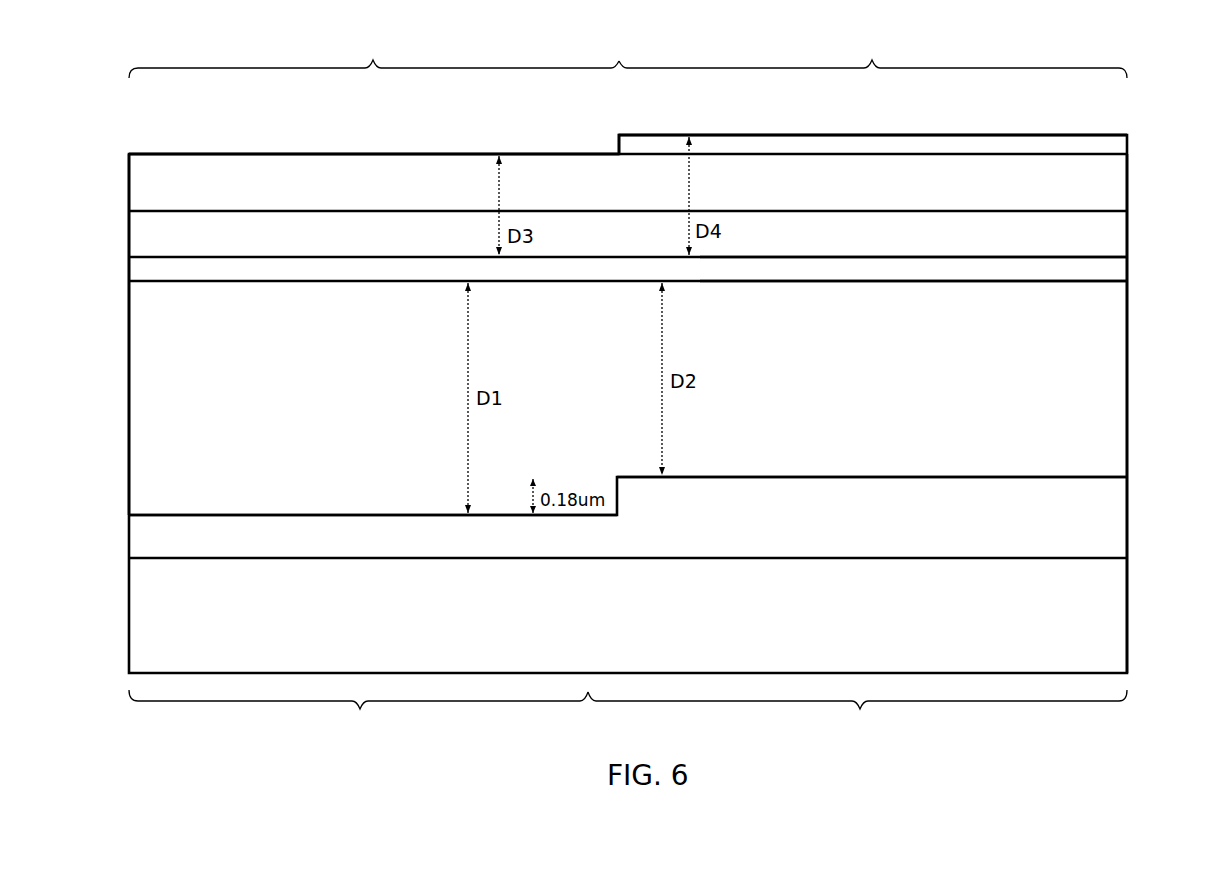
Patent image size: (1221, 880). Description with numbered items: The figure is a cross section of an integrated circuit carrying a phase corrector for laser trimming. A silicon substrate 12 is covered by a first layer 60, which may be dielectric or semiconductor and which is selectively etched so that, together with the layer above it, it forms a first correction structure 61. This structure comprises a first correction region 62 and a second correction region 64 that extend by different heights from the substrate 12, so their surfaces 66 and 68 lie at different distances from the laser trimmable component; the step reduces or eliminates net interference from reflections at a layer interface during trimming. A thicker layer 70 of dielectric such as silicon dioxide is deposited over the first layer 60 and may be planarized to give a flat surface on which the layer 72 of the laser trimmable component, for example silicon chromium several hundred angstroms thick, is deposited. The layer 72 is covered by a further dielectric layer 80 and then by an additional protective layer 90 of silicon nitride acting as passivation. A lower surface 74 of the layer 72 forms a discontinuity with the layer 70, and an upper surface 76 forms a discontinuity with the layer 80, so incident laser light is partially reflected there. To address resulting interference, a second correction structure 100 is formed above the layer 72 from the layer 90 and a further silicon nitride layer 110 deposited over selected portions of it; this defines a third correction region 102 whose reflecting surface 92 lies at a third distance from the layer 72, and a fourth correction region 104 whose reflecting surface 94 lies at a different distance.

The silicon substrate 12 is at (140, 622).
The first layer 60 is at (140, 535).
The first correction structure 61 is at (1138, 519).
The first correction region 62 is at (358, 716).
The second correction region 64 is at (857, 716).
The surface of first correction region 66 is at (240, 513).
The surface of second correction region 68 is at (882, 475).
The thicker layer 70 is at (138, 400).
The layer of laser trimmable component 72 is at (138, 270).
The lower surface 74 is at (855, 283).
The upper surface 76 is at (947, 258).
The further dielectric layer 80 is at (138, 235).
The additional protective layer 90 is at (138, 192).
The upper surface of the device 92 is at (383, 152).
The reflecting surface of fourth correction region 94 is at (905, 133).
The second correction structure 100 is at (1137, 145).
The third correction region 102 is at (374, 55).
The fourth correction region 104 is at (873, 55).
The further layer of silicon nitride 110 is at (783, 145).